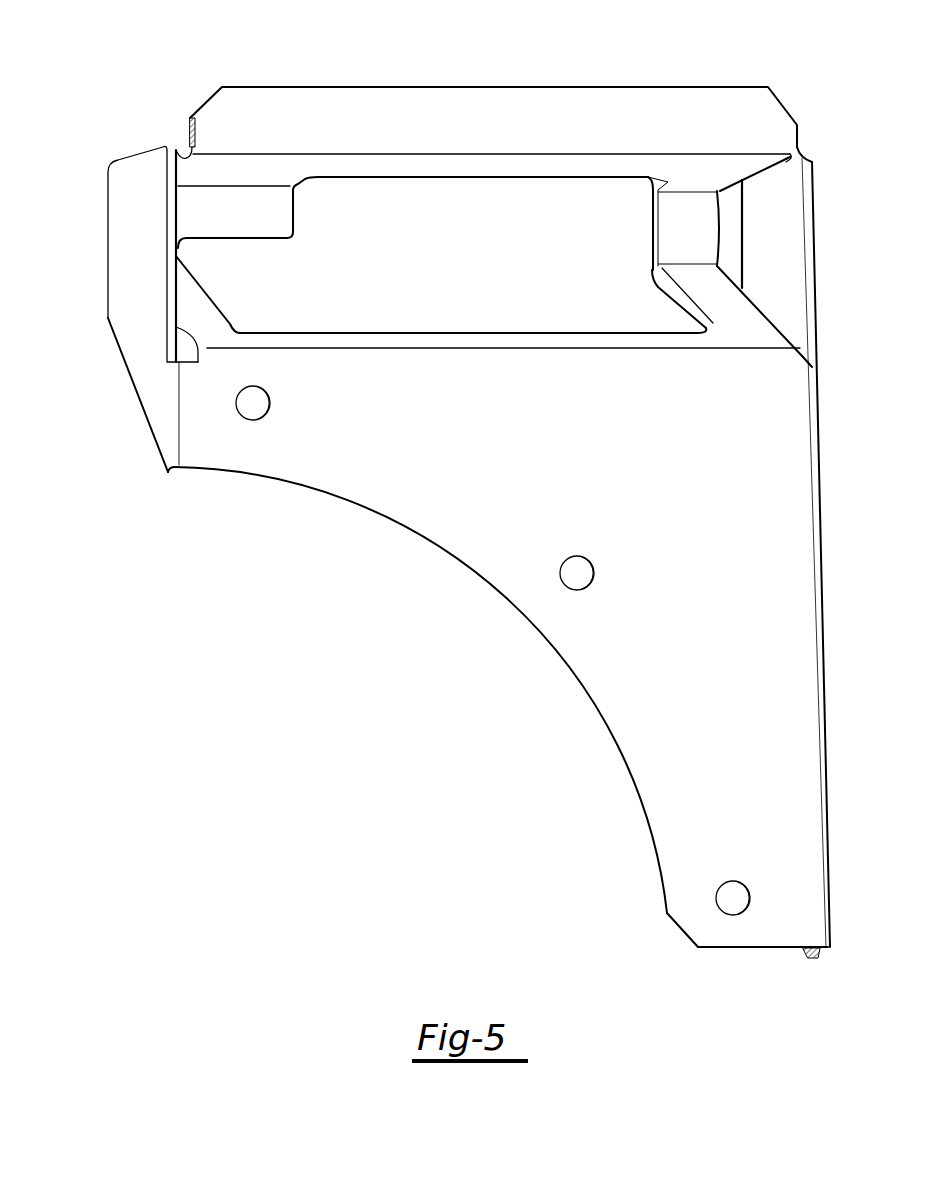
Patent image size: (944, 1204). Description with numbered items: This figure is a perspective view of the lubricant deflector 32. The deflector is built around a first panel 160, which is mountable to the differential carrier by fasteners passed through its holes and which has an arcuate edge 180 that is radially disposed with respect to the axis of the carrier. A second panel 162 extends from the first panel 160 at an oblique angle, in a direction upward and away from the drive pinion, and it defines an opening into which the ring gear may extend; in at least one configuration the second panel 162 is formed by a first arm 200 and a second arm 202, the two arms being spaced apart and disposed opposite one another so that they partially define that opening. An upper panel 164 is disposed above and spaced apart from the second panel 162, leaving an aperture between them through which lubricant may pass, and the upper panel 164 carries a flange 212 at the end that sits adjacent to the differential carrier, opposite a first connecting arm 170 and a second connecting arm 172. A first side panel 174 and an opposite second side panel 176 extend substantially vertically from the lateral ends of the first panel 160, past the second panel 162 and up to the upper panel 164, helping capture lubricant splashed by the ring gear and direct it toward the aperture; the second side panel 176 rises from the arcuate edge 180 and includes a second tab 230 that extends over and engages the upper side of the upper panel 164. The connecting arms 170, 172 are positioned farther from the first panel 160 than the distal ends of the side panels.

The lubricant deflector 32 is at (460, 56).
The first panel 160 is at (438, 450).
The second panel 162 is at (490, 331).
The upper panel 164 is at (480, 178).
The first connecting arm 170 is at (676, 238).
The second connecting arm 172 is at (226, 223).
The first side panel 174 is at (813, 247).
The second side panel 176 is at (107, 252).
The arcuate edge 180 is at (465, 567).
The first arm 200 is at (670, 297).
The second arm 202 is at (208, 292).
The flange 212 is at (448, 137).
The second tab 230 is at (184, 140).